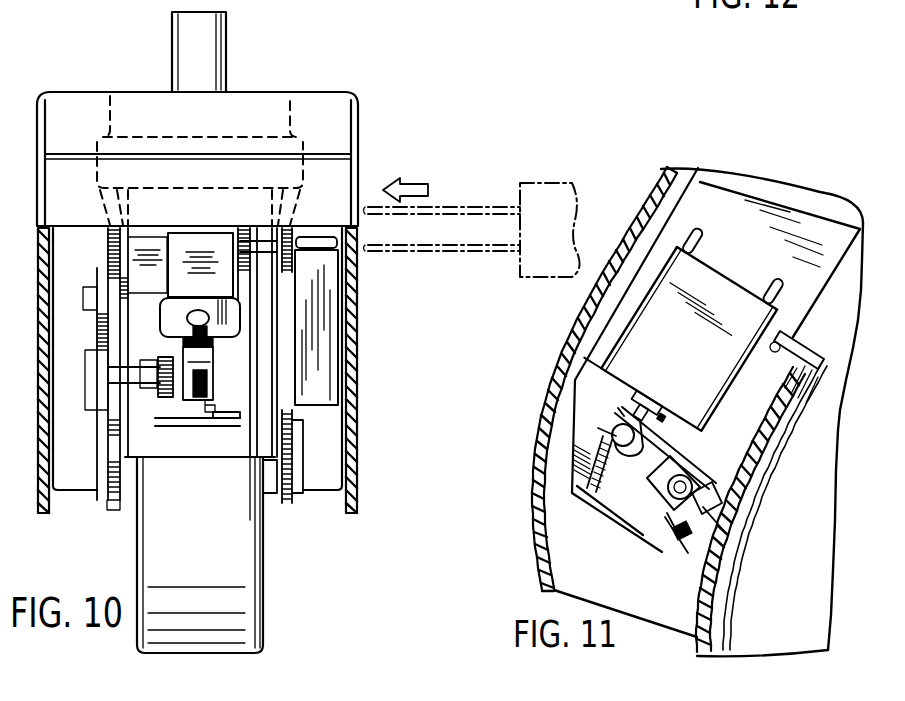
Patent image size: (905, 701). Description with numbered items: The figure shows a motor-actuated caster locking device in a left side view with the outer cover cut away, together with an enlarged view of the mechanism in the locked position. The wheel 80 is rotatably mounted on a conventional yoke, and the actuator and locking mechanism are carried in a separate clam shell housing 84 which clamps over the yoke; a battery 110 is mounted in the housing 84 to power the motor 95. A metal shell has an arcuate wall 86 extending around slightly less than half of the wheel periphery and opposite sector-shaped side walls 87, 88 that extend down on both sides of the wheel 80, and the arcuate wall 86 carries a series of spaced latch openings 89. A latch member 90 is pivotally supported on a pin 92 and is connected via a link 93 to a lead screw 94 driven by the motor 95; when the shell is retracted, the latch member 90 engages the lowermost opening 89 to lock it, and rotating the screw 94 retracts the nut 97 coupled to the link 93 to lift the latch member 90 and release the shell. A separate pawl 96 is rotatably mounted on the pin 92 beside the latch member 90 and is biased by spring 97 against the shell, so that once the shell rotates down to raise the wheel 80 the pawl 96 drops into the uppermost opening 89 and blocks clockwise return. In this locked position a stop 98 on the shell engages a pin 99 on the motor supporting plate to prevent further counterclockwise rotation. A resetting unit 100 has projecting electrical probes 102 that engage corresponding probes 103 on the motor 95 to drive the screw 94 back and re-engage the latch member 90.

In FIG. 10, the wheel 80 is at (243, 577).
In FIG. 10, the clam shell housing 84 is at (358, 296).
In FIG. 11, the clam shell housing 84 is at (578, 320).
In FIG. 10, the arcuate wall 86 is at (258, 238).
In FIG. 11, the arcuate wall 86 is at (752, 453).
In FIG. 10, the side wall 87 is at (280, 373).
In FIG. 10, the side wall 88 is at (108, 262).
In FIG. 10, the latch openings 89 is at (238, 420).
In FIG. 11, the latch openings 89 is at (717, 515).
In FIG. 10, the latch member 90 is at (196, 420).
In FIG. 11, the latch member 90 is at (680, 550).
In FIG. 10, the pin 92 is at (215, 385).
In FIG. 11, the pin 92 is at (687, 478).
In FIG. 11, the link 93 is at (633, 458).
In FIG. 10, the lead screw 94 is at (212, 325).
In FIG. 11, the lead screw 94 is at (592, 458).
In FIG. 10, the motor 95 is at (200, 248).
In FIG. 11, the motor 95 is at (620, 358).
In FIG. 10, the pawl 96 is at (167, 397).
In FIG. 11, the pawl 96 is at (720, 507).
In FIG. 10, the spring 97 is at (118, 336).
In FIG. 11, the stop 98 is at (802, 338).
In FIG. 11, the pin 99 is at (772, 352).
In FIG. 10, the resetting unit 100 is at (557, 180).
In FIG. 10, the electrical probes 102 is at (443, 218).
In FIG. 11, the probes 103 is at (708, 236).
In FIG. 10, the battery 110 is at (330, 338).